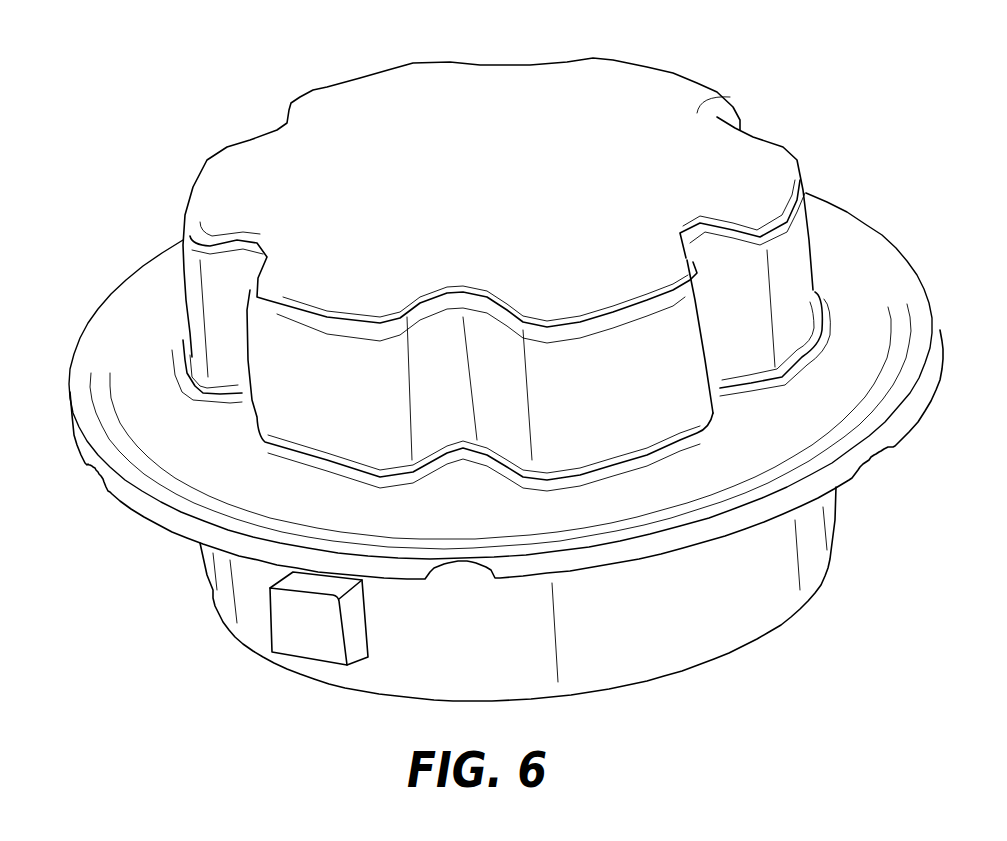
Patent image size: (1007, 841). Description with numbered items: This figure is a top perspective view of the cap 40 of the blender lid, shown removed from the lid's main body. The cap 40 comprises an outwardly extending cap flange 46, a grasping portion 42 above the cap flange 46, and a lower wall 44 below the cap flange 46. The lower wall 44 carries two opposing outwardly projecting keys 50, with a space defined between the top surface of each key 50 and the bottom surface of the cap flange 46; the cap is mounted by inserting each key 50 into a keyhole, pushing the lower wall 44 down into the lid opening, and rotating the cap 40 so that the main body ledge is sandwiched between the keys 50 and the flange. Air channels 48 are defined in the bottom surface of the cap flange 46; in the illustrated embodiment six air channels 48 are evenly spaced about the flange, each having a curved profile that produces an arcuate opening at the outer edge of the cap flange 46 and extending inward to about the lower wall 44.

The cap 40 is at (206, 93).
The grasping portion 42 is at (653, 92).
The lower wall 44 is at (730, 623).
The cap flange 46 is at (865, 255).
The air channel 48 is at (100, 471).
The key 50 is at (300, 640).